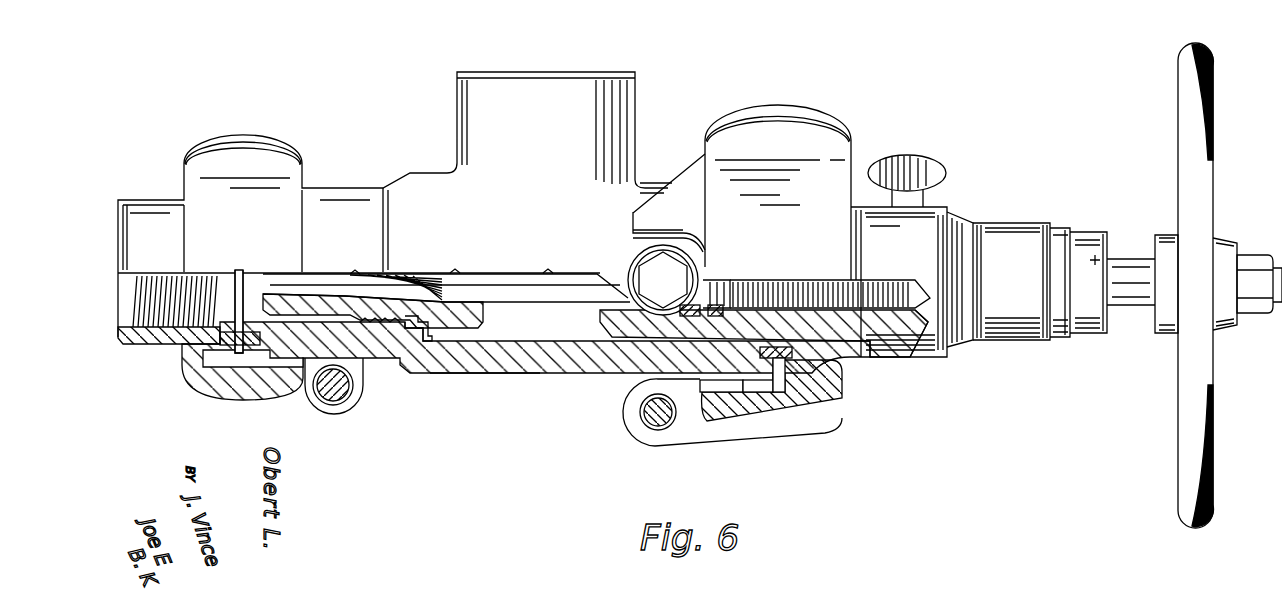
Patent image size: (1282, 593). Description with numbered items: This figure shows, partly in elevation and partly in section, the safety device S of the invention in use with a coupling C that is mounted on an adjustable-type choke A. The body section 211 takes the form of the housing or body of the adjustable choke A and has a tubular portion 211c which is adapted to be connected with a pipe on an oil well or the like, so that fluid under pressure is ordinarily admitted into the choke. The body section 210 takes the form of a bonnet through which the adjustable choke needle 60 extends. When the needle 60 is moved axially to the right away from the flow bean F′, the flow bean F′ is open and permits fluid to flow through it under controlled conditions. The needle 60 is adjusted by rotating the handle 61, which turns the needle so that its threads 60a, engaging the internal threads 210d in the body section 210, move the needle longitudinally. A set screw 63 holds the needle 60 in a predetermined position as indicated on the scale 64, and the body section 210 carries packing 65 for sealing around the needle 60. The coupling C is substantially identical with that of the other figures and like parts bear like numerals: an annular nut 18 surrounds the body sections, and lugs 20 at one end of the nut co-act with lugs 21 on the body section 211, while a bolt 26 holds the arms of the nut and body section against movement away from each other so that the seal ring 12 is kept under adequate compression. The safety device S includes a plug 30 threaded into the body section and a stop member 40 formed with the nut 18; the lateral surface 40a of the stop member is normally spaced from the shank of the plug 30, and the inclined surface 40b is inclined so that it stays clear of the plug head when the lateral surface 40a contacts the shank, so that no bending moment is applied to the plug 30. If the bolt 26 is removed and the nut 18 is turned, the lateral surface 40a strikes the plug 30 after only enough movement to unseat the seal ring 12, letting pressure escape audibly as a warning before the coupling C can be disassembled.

The tubular portion 211c is at (455, 100).
The body section 211 is at (553, 365).
The flow bean F′ is at (430, 332).
The adjustable choke A is at (487, 371).
The adjustable choke needle 60 is at (523, 297).
The threads 60a is at (833, 280).
The body section 210 is at (843, 340).
The internal threads 210d is at (907, 310).
The safety device S is at (627, 257).
The plug 30 is at (631, 276).
The packing 65 is at (703, 303).
The stop member 40 is at (687, 177).
The lateral surface 40a is at (633, 240).
The inclined surface 40b is at (673, 233).
The coupling C is at (830, 116).
The set screw 63 is at (920, 158).
The scale 64 is at (1083, 247).
The handle 61 is at (1188, 390).
The bolt 26 is at (650, 415).
The annular nut 18 is at (822, 432).
The lugs 20 is at (700, 388).
The lugs 21 is at (757, 390).
The seal ring 12 is at (786, 375).